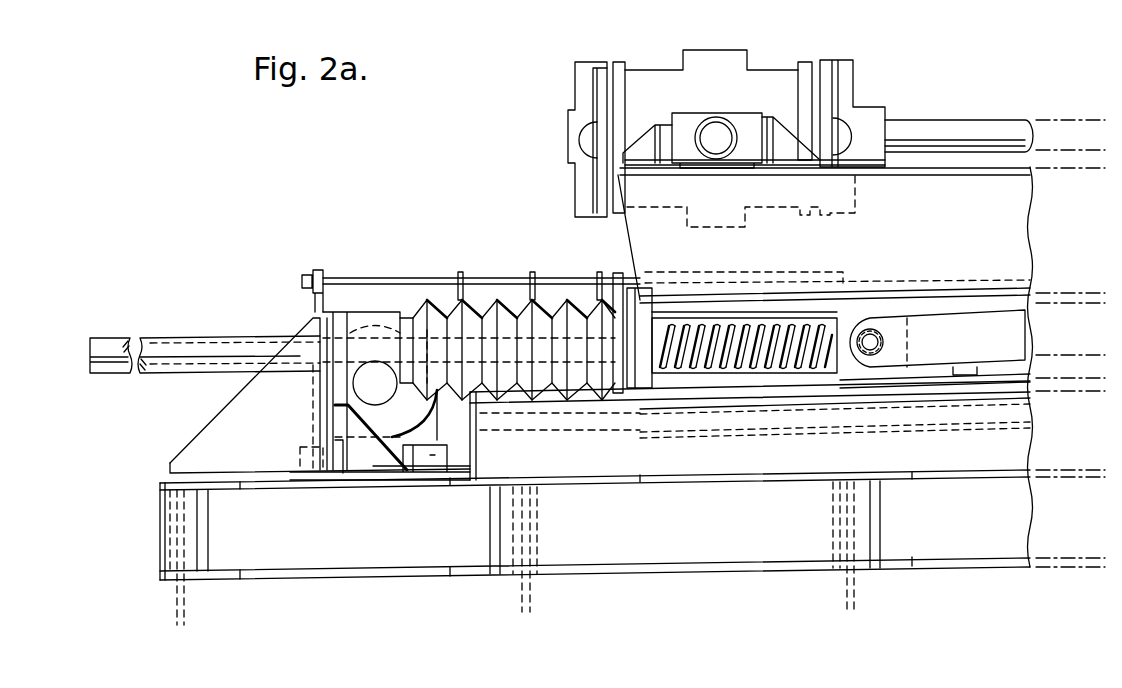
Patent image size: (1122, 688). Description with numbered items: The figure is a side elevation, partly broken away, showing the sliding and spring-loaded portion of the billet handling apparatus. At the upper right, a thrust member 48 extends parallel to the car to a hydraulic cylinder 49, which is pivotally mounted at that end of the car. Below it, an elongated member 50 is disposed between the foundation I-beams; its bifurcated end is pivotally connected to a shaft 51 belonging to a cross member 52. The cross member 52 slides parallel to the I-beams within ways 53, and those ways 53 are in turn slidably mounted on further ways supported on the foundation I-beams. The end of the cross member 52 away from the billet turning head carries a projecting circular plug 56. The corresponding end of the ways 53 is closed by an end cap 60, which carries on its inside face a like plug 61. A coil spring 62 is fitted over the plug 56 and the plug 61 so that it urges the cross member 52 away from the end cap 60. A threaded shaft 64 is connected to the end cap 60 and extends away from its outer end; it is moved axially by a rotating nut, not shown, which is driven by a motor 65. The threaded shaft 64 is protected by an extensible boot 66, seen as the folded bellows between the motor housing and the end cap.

The thrust member 48 is at (990, 135).
The hydraulic cylinder 49 is at (652, 86).
The elongated member 50 is at (1005, 325).
The shaft 51 is at (876, 348).
The cross member 52 is at (857, 370).
The ways 53 is at (848, 305).
The plug 56 is at (777, 373).
The end cap 60 is at (633, 370).
The plug 61 is at (703, 357).
The coil spring 62 is at (746, 375).
The threaded shaft 64 is at (209, 354).
The motor 65 is at (387, 436).
The extensible boot 66 is at (483, 298).